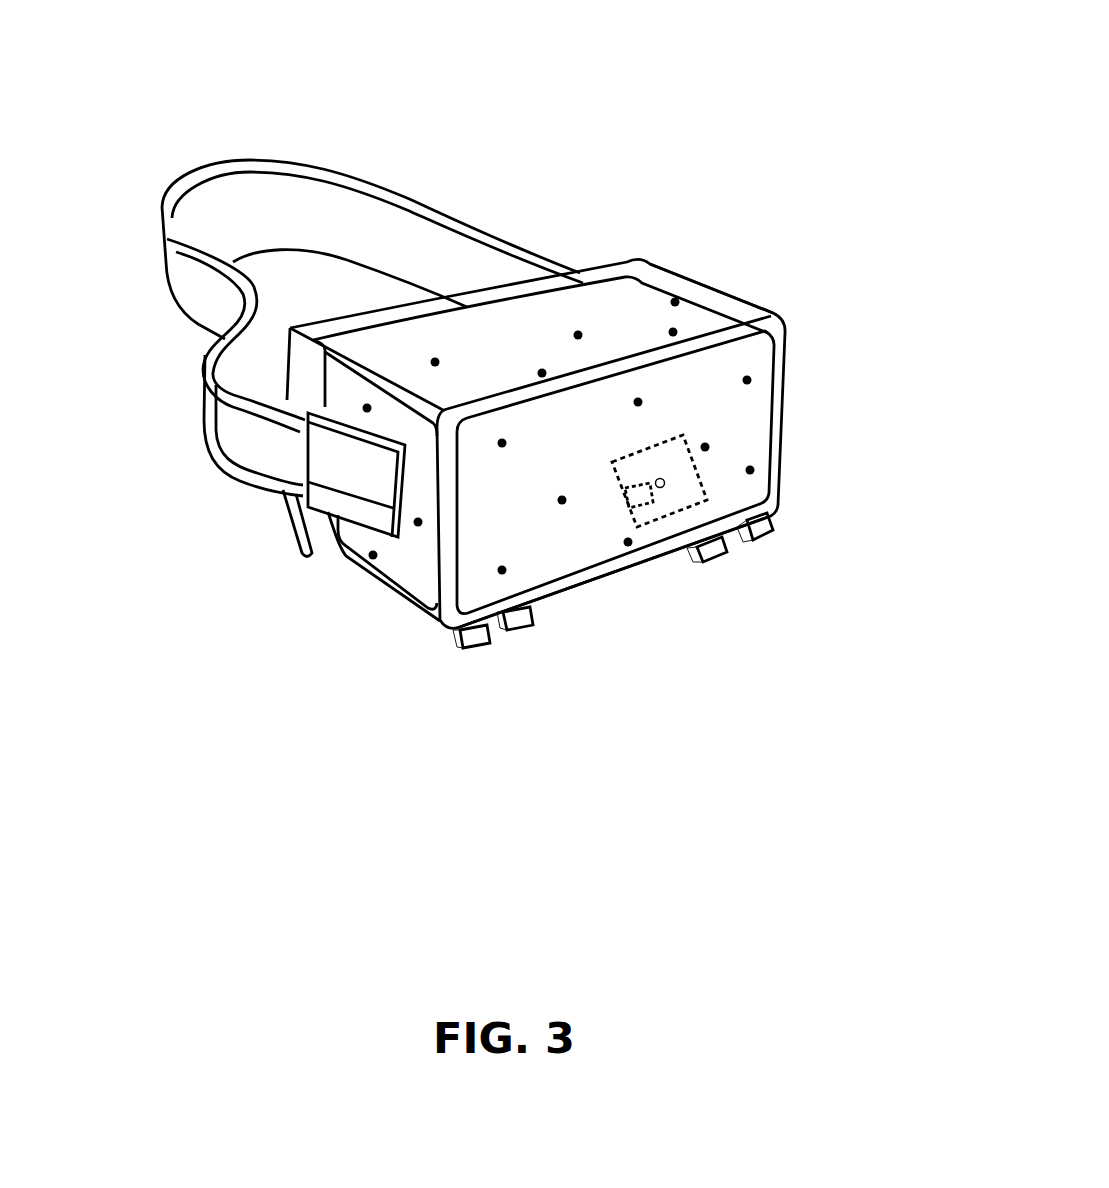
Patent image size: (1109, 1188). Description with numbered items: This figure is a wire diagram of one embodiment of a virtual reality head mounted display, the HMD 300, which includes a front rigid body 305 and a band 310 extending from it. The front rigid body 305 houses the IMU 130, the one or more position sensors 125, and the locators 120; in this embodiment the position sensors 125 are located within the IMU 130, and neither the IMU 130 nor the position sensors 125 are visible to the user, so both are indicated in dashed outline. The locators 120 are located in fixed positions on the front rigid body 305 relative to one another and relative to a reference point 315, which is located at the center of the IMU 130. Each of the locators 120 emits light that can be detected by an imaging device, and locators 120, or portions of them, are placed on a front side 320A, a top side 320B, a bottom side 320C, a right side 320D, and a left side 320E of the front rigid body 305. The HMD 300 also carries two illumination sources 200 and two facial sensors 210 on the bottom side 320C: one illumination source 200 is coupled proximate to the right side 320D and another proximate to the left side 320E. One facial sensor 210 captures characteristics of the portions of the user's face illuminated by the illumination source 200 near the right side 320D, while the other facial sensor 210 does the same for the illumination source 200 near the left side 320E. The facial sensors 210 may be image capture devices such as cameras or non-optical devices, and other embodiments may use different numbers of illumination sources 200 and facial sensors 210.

The HMD 300 is at (498, 37).
The front rigid body 305 is at (788, 340).
The band 310 is at (508, 242).
The reference point 315 is at (663, 492).
The front side 320A is at (575, 553).
The top side 320B is at (407, 362).
The bottom side 320C is at (349, 571).
The right side 320D is at (410, 555).
The left side 320E is at (730, 295).
The locators 120 is at (709, 445).
The position sensors 125 is at (638, 500).
The IMU 130 is at (704, 466).
The illumination source 200 is at (478, 648).
The facial sensor 210 is at (518, 640).